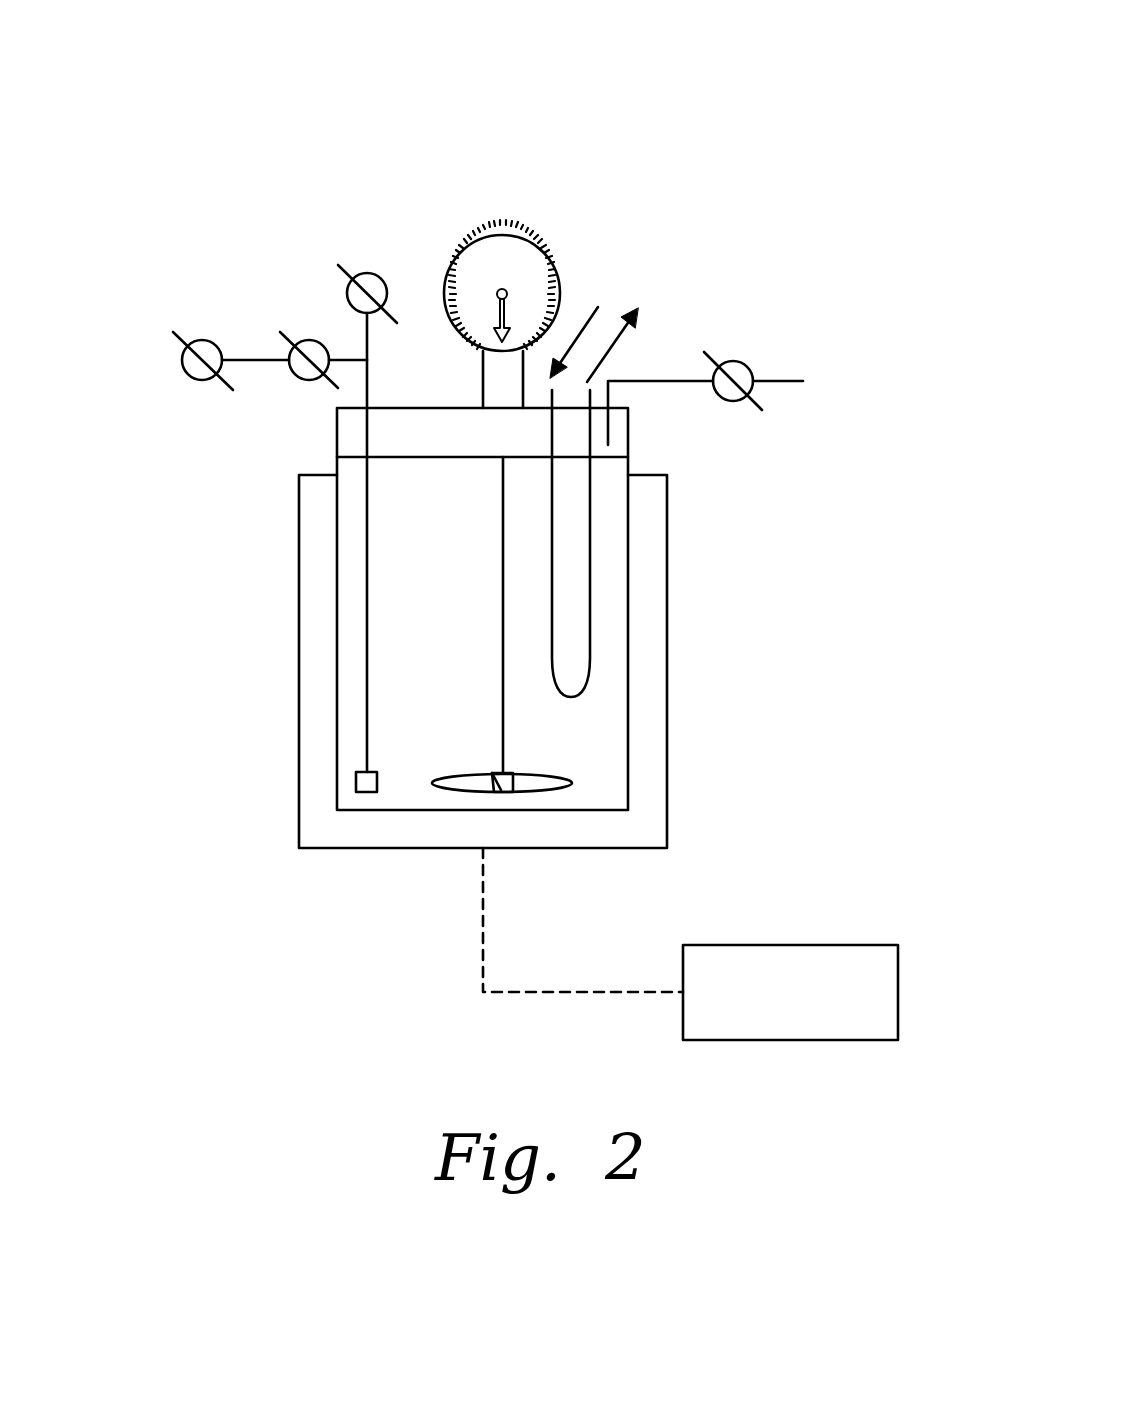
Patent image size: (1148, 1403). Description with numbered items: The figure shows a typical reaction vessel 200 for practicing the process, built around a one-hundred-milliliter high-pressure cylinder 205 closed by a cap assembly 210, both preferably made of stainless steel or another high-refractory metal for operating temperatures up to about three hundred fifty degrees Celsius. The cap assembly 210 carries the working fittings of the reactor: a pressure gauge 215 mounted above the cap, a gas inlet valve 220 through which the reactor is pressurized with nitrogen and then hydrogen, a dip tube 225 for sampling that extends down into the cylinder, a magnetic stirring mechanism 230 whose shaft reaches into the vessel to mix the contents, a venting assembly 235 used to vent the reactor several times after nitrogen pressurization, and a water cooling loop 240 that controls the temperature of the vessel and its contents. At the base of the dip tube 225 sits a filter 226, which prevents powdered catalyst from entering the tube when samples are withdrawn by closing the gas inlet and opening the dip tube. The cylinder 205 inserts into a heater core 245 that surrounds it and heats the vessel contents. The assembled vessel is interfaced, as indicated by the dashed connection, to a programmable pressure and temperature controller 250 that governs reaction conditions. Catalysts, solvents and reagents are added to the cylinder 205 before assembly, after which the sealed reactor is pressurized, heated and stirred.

The reaction vessel 200 is at (772, 145).
The high-pressure cylinder 205 is at (365, 812).
The cap assembly 210 is at (628, 432).
The pressure gauge 215 is at (556, 268).
The gas inlet valve 220 is at (347, 292).
The dip tube 225 is at (185, 368).
The filter 226 is at (355, 782).
The magnetic stirring mechanism 230 is at (453, 792).
The venting assembly 235 is at (785, 381).
The water cooling loop 240 is at (590, 535).
The heater core 245 is at (299, 642).
The programmable pressure and temperature controller 250 is at (828, 1012).